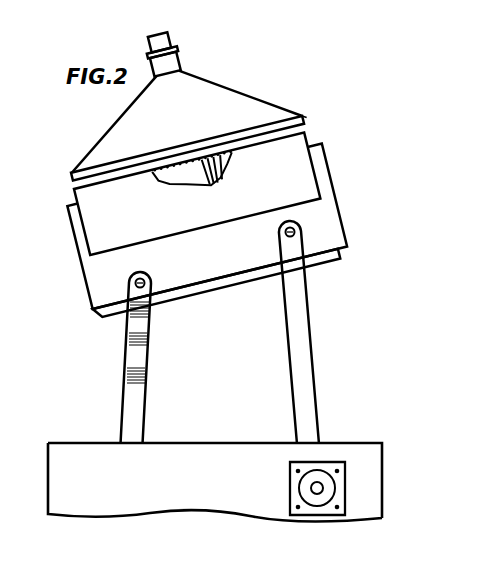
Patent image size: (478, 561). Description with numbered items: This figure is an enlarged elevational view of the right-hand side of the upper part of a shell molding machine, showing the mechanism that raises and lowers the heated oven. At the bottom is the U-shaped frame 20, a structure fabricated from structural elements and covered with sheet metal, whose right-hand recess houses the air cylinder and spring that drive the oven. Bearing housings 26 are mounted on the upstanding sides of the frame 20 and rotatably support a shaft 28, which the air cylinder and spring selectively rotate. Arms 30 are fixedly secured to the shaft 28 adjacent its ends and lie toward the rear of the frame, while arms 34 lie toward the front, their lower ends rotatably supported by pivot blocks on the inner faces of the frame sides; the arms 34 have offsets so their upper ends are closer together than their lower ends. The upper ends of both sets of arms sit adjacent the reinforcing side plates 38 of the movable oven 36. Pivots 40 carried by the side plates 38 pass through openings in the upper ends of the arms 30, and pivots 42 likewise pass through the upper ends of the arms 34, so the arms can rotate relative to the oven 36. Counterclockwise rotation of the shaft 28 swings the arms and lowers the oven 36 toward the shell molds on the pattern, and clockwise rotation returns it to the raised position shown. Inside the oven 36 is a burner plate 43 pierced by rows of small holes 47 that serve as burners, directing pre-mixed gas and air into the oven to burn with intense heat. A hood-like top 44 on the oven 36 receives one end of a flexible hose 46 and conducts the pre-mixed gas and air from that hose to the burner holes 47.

The U-shaped frame 20 is at (380, 446).
The bearing housings 26 is at (335, 488).
The shaft 28 is at (314, 488).
The arms 30 is at (311, 380).
The arms 34 is at (123, 398).
The movable oven 36 is at (231, 284).
The reinforcing side plates 38 is at (336, 216).
The pivots 40 is at (285, 233).
The pivots 42 is at (128, 291).
The burner plate 43 is at (186, 182).
The hood-like top 44 is at (250, 106).
The flexible hose 46 is at (148, 43).
The small holes 47 is at (230, 186).